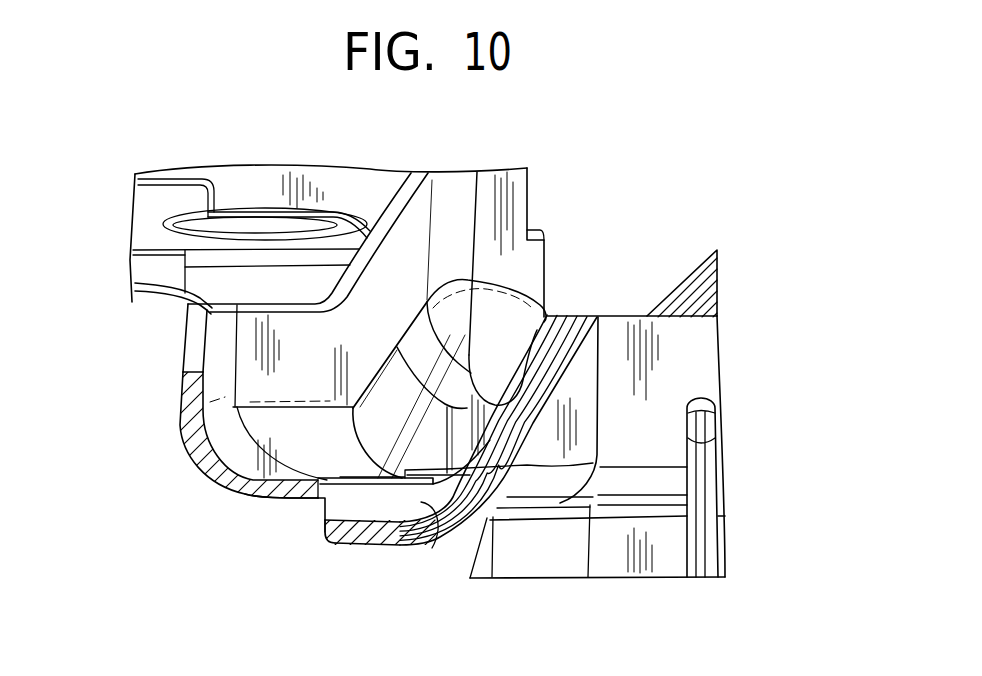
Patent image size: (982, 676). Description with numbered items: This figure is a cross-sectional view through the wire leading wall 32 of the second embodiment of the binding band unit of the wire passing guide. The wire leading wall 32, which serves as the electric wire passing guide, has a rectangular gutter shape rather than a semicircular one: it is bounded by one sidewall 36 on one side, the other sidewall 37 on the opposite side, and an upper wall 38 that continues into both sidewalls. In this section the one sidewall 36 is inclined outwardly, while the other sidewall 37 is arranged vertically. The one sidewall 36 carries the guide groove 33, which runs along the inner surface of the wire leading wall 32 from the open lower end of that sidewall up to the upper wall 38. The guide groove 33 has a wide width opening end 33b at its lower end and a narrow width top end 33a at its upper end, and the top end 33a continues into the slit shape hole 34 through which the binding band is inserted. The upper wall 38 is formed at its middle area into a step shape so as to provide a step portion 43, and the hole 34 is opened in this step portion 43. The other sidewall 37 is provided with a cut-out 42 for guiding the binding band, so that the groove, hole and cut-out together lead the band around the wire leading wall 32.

The wire leading wall 32 is at (388, 558).
The guide groove 33 is at (423, 503).
The narrow width top end 33a is at (333, 508).
The wide width opening end 33b is at (547, 317).
The slit shape hole 34 is at (325, 510).
The one sidewall 36 is at (513, 298).
The other sidewall 37 is at (187, 397).
The upper wall 38 is at (268, 490).
The cut-out 42 is at (197, 342).
The step portion 43 is at (325, 530).